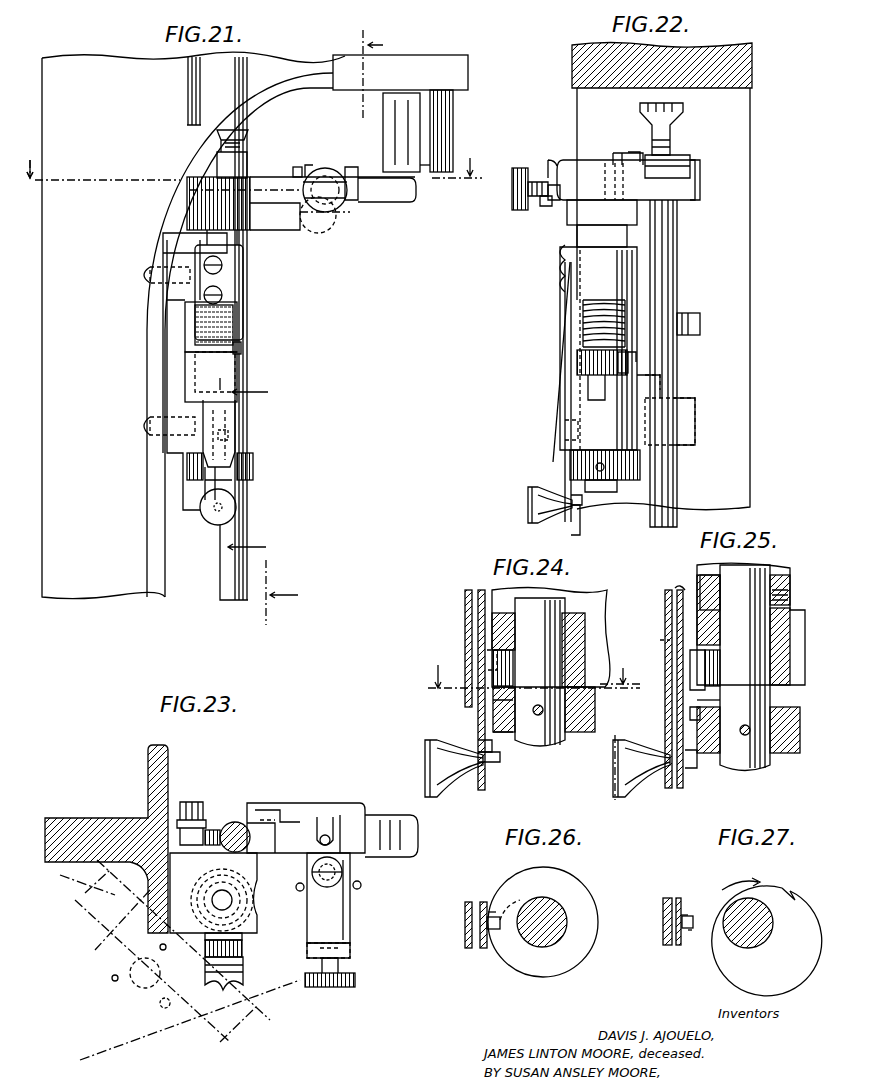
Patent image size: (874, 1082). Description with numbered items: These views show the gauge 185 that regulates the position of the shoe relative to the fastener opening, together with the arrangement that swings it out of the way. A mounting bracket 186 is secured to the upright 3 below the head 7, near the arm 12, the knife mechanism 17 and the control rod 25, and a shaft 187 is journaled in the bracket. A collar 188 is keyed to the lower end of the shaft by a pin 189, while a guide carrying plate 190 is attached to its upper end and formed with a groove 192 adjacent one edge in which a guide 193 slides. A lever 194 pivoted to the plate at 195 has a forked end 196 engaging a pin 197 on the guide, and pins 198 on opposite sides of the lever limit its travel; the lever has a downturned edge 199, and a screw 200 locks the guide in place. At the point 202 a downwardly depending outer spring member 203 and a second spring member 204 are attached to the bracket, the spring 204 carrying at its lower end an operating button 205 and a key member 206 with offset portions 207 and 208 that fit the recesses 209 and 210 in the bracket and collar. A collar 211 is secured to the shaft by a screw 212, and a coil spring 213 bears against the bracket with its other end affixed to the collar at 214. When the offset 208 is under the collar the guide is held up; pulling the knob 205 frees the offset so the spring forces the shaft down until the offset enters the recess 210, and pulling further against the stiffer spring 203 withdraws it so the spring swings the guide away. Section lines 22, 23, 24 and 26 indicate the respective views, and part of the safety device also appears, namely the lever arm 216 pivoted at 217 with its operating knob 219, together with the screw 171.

In FIG. 21, the upright 3 is at (92, 598).
In FIG. 22, the upright 3 is at (752, 411).
In FIG. 23, the upright 3 is at (66, 818).
In FIG. 21, the head 7 is at (284, 66).
In FIG. 22, the head 7 is at (724, 46).
In FIG. 21, the arm 12 is at (474, 65).
In FIG. 21, the knife mechanism 17 is at (461, 121).
In FIG. 21, the section line 22— 22 is at (334, 327).
In FIG. 21, the section line 23— 23 is at (251, 161).
In FIG. 21, the section line 24— 24 is at (253, 466).
In FIG. 21, the control rod 25 is at (246, 154).
In FIG. 22, the control rod 25 is at (680, 478).
In FIG. 23, the control rod 25 is at (238, 822).
In FIG. 24, the section line 26— 26 is at (534, 668).
In FIG. 25, the section line 26— 26 is at (620, 667).
In FIG. 21, the screw 171 is at (246, 121).
In FIG. 21, the gauge 185 is at (263, 245).
In FIG. 22, the gauge 185 is at (705, 176).
In FIG. 21, the mounting bracket 186 is at (168, 363).
In FIG. 22, the mounting bracket 186 is at (634, 392).
In FIG. 24, the mounting bracket 186 is at (575, 598).
In FIG. 25, the mounting bracket 186 is at (790, 686).
In FIG. 21, the shaft 187 is at (250, 235).
In FIG. 22, the shaft 187 is at (597, 384).
In FIG. 23, the shaft 187 is at (208, 903).
In FIG. 24, the shaft 187 is at (552, 613).
In FIG. 25, the shaft 187 is at (733, 768).
In FIG. 26, the shaft 187 is at (556, 910).
In FIG. 27, the shaft 187 is at (743, 947).
In FIG. 21, the collar 188 is at (254, 468).
In FIG. 22, the collar 188 is at (642, 462).
In FIG. 24, the collar 188 is at (596, 702).
In FIG. 25, the collar 188 is at (790, 753).
In FIG. 26, the collar 188 is at (535, 972).
In FIG. 27, the collar 188 is at (772, 965).
In FIG. 22, the pin 189 is at (604, 471).
In FIG. 24, the pin 189 is at (545, 715).
In FIG. 25, the pin 189 is at (745, 737).
In FIG. 21, the guide carrying plate 190 is at (264, 178).
In FIG. 22, the guide carrying plate 190 is at (696, 198).
In FIG. 23, the guide carrying plate 190 is at (296, 803).
In FIG. 21, the groove 192 is at (298, 164).
In FIG. 23, the groove 192 is at (258, 805).
In FIG. 21, the guide 193 is at (416, 187).
In FIG. 22, the guide 193 is at (685, 168).
In FIG. 23, the guide 193 is at (418, 837).
In FIG. 21, the lever 194 is at (297, 167).
In FIG. 22, the lever 194 is at (565, 163).
In FIG. 23, the lever 194 is at (335, 925).
In FIG. 21, the pivot 195 is at (333, 168).
In FIG. 22, the pivot 195 is at (626, 160).
In FIG. 23, the pivot 195 is at (312, 868).
In FIG. 23, the forked end 196 is at (335, 825).
In FIG. 22, the pin 197 is at (672, 142).
In FIG. 23, the pin 197 is at (323, 818).
In FIG. 21, the pins 198 is at (350, 178).
In FIG. 22, the pins 198 is at (610, 165).
In FIG. 23, the pins 198 is at (361, 886).
In FIG. 22, the downturned edge 199 is at (546, 208).
In FIG. 23, the downturned edge 199 is at (350, 953).
In FIG. 21, the screw 200 is at (332, 228).
In FIG. 22, the screw 200 is at (512, 200).
In FIG. 23, the screw 200 is at (320, 986).
In FIG. 21, the attachment point 202 is at (218, 292).
In FIG. 22, the attachment point 202 is at (560, 270).
In FIG. 21, the spring member 203 is at (236, 413).
In FIG. 22, the spring member 203 is at (562, 350).
In FIG. 23, the spring member 203 is at (243, 952).
In FIG. 24, the spring member 203 is at (465, 598).
In FIG. 25, the spring member 203 is at (668, 612).
In FIG. 26, the spring member 203 is at (468, 948).
In FIG. 27, the spring member 203 is at (663, 903).
In FIG. 21, the spring member 204 is at (213, 478).
In FIG. 22, the spring member 204 is at (565, 473).
In FIG. 23, the spring member 204 is at (242, 936).
In FIG. 24, the spring member 204 is at (478, 612).
In FIG. 25, the spring member 204 is at (671, 689).
In FIG. 26, the spring member 204 is at (483, 950).
In FIG. 27, the spring member 204 is at (678, 898).
In FIG. 21, the operating button 205 is at (205, 516).
In FIG. 22, the operating button 205 is at (528, 505).
In FIG. 23, the operating button 205 is at (230, 990).
In FIG. 24, the operating button 205 is at (425, 748).
In FIG. 25, the operating button 205 is at (641, 767).
In FIG. 21, the key member 206 is at (245, 435).
In FIG. 22, the key member 206 is at (583, 499).
In FIG. 24, the key member 206 is at (492, 718).
In FIG. 25, the key member 206 is at (690, 715).
In FIG. 26, the key member 206 is at (490, 912).
In FIG. 27, the key member 206 is at (678, 945).
In FIG. 22, the offset portion 207 is at (565, 428).
In FIG. 24, the offset portion 207 is at (497, 655).
In FIG. 25, the offset portion 207 is at (692, 665).
In FIG. 22, the offset portion 208 is at (577, 520).
In FIG. 24, the offset portion 208 is at (500, 760).
In FIG. 25, the offset portion 208 is at (697, 760).
In FIG. 26, the offset portion 208 is at (520, 900).
In FIG. 27, the offset portion 208 is at (690, 945).
In FIG. 24, the recess 209 is at (513, 656).
In FIG. 25, the recess 209 is at (683, 595).
In FIG. 24, the recess 210 is at (512, 702).
In FIG. 25, the recess 210 is at (712, 727).
In FIG. 26, the recess 210 is at (495, 930).
In FIG. 27, the recess 210 is at (792, 890).
In FIG. 21, the collar 211 is at (242, 372).
In FIG. 22, the collar 211 is at (582, 366).
In FIG. 25, the collar 211 is at (705, 578).
In FIG. 22, the screw 212 is at (630, 364).
In FIG. 25, the screw 212 is at (785, 595).
In FIG. 21, the coil spring 213 is at (240, 320).
In FIG. 22, the coil spring 213 is at (606, 318).
In FIG. 23, the coil spring 213 is at (232, 890).
In FIG. 21, the spring attachment 214 is at (243, 349).
In FIG. 22, the spring attachment 214 is at (637, 352).
In FIG. 22, the lever arm 216 is at (652, 387).
In FIG. 23, the lever arm 216 is at (213, 830).
In FIG. 22, the pivot 217 is at (700, 430).
In FIG. 22, the operating knob 219 is at (702, 324).
In FIG. 23, the operating knob 219 is at (192, 802).